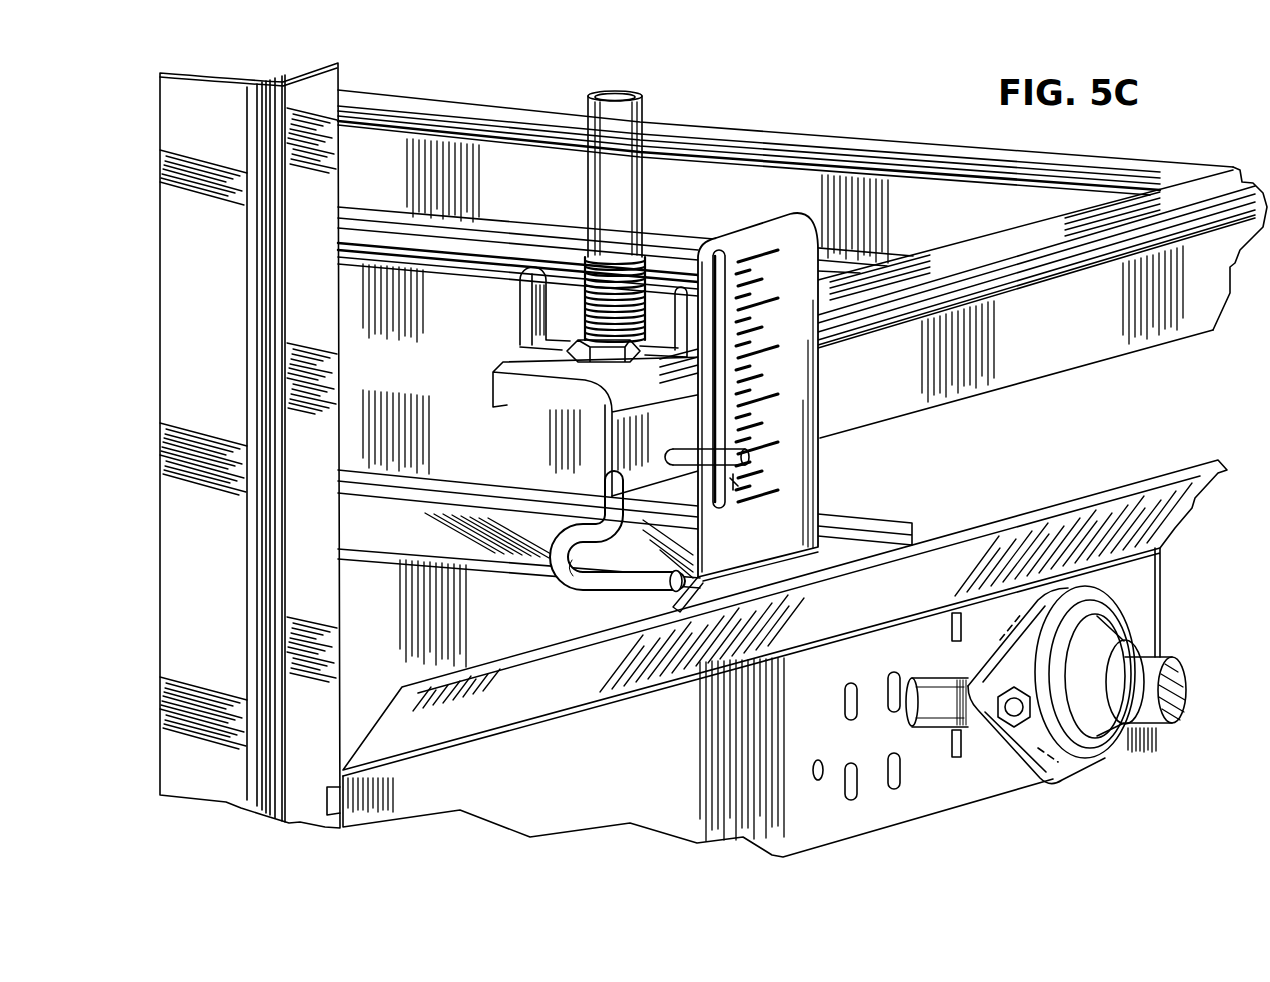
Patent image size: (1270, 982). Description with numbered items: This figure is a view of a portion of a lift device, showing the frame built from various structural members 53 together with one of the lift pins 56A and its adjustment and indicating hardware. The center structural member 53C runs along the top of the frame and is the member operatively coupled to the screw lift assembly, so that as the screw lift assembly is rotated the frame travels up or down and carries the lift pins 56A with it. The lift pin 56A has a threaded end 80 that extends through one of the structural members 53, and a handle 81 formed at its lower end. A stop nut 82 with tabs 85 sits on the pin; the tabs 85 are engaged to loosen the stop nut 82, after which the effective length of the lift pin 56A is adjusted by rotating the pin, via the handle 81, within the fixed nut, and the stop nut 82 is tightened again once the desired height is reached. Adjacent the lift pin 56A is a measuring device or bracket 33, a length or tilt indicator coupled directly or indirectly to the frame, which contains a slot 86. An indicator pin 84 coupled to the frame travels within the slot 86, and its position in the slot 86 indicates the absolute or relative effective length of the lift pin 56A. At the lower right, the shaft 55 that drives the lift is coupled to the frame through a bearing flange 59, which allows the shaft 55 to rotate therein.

The measuring device or bracket 33 is at (813, 397).
The structural member 53 is at (481, 457).
The center structural member 53C is at (787, 138).
The shaft 55 is at (1186, 697).
The lift pin 56A is at (615, 201).
The bearing flange 59 is at (1053, 763).
The threaded end 80 is at (590, 265).
The handle 81 is at (587, 583).
The stop nut 82 is at (578, 348).
The indicator pin 84 is at (733, 470).
The tabs 85 is at (530, 302).
The slot 86 is at (784, 395).